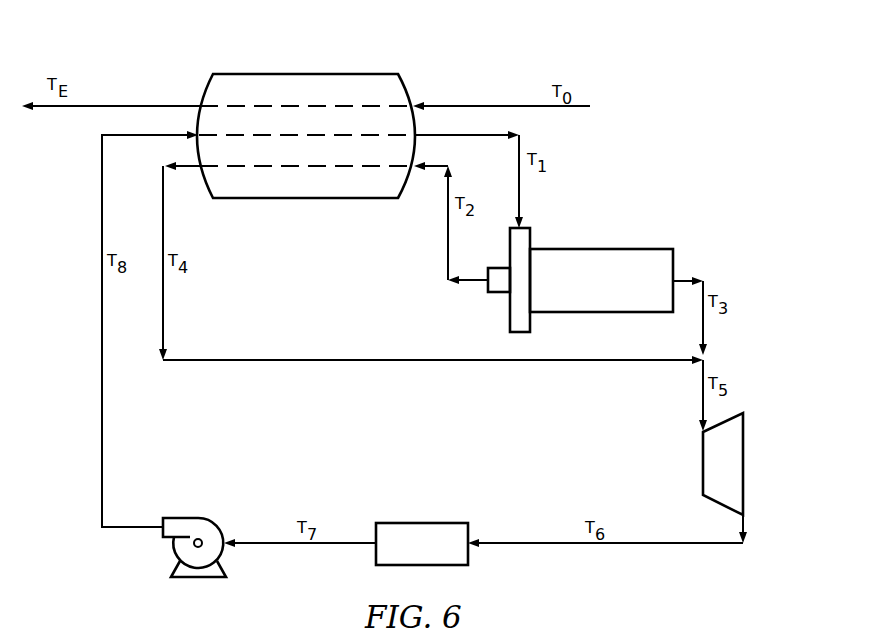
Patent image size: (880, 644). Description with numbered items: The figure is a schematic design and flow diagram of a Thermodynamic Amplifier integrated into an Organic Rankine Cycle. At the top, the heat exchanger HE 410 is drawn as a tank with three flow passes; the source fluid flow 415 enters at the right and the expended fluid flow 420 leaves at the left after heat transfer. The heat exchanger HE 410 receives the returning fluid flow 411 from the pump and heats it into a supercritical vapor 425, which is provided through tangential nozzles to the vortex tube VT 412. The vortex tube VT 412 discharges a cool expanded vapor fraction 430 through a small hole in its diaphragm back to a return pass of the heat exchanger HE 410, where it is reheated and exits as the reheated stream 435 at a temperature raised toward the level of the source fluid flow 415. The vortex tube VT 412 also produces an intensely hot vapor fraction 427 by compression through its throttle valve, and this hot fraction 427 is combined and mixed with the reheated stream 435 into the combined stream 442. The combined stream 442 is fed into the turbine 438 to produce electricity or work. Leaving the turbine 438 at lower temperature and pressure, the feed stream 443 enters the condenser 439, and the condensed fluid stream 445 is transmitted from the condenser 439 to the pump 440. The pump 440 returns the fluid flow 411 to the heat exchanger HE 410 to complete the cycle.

The heat exchanger HE 410 is at (305, 74).
The fluid flow T8 411 is at (101, 393).
The vortex tube VT 412 is at (613, 249).
The source temperature To 415 is at (478, 104).
The expended fluid flow TE 420 is at (128, 104).
The supercritical vapor T1 425 is at (520, 186).
The intensely hot vapor T3 427 is at (706, 332).
The cool expanded vapor T2 430 is at (447, 240).
The stream T4 435 is at (165, 305).
The turbine 438 is at (745, 462).
The condenser 439 is at (423, 523).
The pump 440 is at (192, 517).
The combined stream T5 442 is at (702, 382).
The feed stream T6 443 is at (652, 546).
The condensed fluid stream T7 445 is at (284, 546).